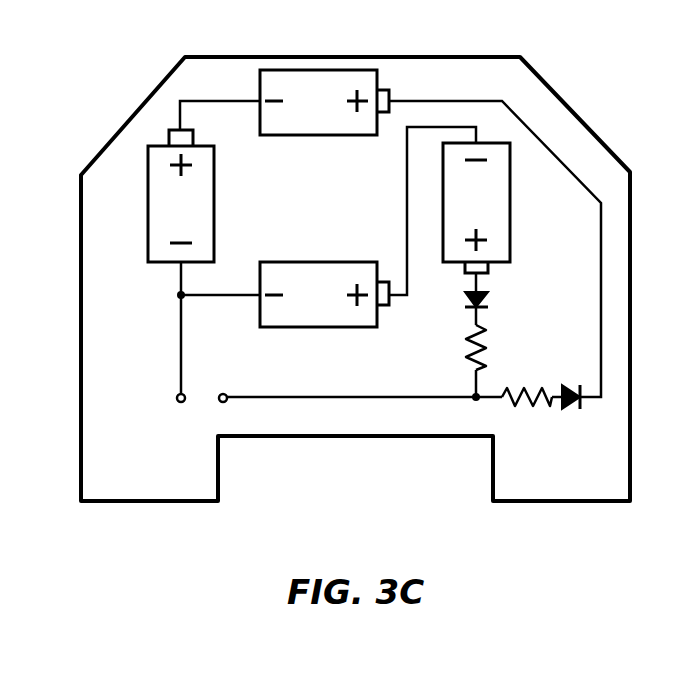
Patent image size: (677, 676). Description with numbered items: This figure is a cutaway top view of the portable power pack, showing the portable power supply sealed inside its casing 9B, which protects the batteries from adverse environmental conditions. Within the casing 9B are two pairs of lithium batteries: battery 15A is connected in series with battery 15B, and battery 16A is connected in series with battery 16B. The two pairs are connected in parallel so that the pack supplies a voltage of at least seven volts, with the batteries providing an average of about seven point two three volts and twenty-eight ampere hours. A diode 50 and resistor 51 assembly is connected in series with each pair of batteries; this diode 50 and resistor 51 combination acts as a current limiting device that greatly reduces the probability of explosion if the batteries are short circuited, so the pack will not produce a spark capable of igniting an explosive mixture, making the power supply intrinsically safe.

The casing 9B is at (557, 92).
The lithium battery 15A is at (181, 196).
The lithium battery 15B is at (324, 102).
The lithium battery 16A is at (476, 208).
The lithium battery 16B is at (324, 294).
The diode 50 is at (490, 297).
The resistor 51 is at (466, 353).